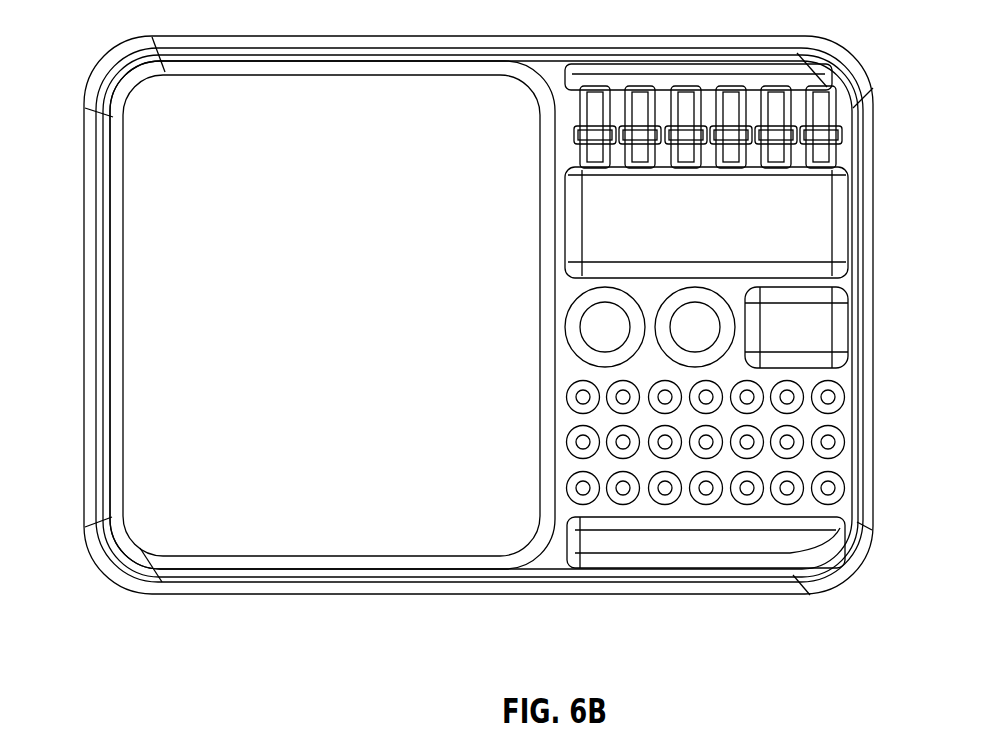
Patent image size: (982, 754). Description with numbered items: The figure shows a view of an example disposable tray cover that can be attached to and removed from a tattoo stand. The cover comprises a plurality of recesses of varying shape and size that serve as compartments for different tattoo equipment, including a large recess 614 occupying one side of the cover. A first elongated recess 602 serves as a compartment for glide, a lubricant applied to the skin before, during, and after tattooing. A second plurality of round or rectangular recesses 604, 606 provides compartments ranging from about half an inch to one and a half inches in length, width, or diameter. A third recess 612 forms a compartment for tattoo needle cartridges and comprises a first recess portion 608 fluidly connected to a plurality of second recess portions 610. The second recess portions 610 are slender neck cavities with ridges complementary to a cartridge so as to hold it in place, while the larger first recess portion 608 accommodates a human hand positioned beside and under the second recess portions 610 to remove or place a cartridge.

The first elongated recess 602 is at (578, 550).
The round recesses 604 is at (568, 390).
The rectangular recesses 606 is at (572, 322).
The first recess portion 608 is at (565, 228).
The second recess portions 610 is at (583, 125).
The third recesses 612 is at (815, 229).
The recess 614 is at (150, 253).